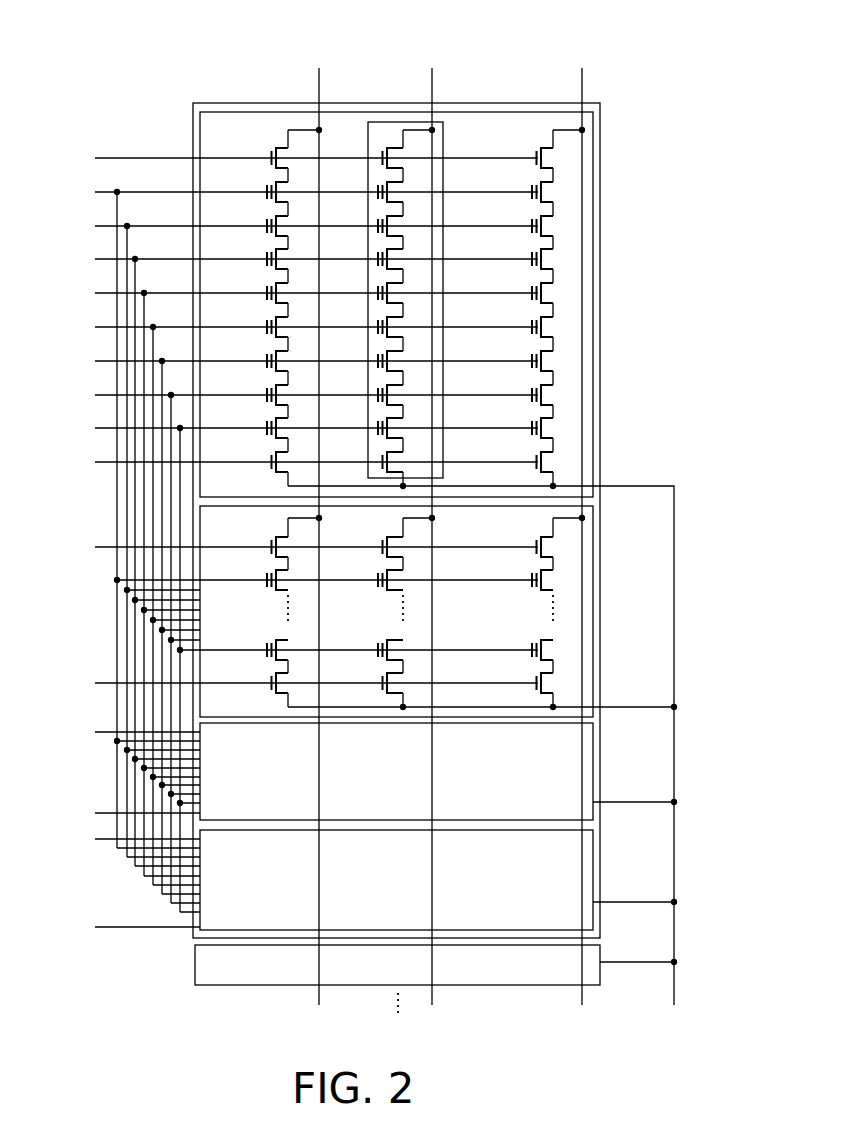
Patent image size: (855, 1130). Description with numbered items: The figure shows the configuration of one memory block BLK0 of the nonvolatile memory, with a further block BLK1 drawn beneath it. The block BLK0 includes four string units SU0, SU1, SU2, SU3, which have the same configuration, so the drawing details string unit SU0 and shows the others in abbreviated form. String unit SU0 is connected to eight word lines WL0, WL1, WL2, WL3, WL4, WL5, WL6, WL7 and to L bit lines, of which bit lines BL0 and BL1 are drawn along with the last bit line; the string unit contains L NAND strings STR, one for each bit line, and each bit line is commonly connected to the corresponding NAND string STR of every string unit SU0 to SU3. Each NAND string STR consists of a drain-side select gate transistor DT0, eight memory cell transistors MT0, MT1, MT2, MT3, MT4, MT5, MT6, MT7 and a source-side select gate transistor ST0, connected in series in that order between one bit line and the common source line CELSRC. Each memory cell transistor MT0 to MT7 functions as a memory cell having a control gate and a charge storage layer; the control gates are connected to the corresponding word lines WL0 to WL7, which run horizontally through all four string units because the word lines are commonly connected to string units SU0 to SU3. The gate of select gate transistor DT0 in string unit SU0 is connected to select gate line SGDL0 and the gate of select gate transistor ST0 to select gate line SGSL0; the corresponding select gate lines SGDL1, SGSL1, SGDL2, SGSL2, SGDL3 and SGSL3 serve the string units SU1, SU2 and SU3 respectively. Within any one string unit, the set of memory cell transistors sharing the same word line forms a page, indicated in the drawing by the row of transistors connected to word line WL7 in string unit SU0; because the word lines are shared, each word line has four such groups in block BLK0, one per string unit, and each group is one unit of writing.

The block BLK0 is at (600, 132).
The block BLK1 is at (195, 973).
The string unit SU0 is at (593, 229).
The string unit SU1 is at (593, 528).
The string unit SU2 is at (593, 751).
The string unit SU3 is at (593, 851).
The NAND string STR is at (445, 128).
The element page is at (562, 183).
The common source line CELSRC is at (483, 735).
The bit line BL0 is at (320, 83).
The bit line BL1 is at (433, 83).
The select gate line SGDL0 is at (285, 157).
The select gate line SGDL1 is at (285, 546).
The select gate line SGDL2 is at (116, 731).
The select gate line SGDL3 is at (116, 838).
The select gate line SGSL0 is at (286, 461).
The select gate line SGSL1 is at (286, 682).
The select gate line SGSL2 is at (117, 812).
The select gate line SGSL3 is at (117, 926).
The word line WL0 is at (296, 664).
The word line WL1 is at (296, 643).
The word line WL2 is at (296, 622).
The word line WL3 is at (296, 600).
The word line WL4 is at (296, 579).
The word line WL5 is at (296, 557).
The word line WL6 is at (296, 536).
The word line WL7 is at (296, 514).
The select gate transistor DT0 is at (264, 155).
The select gate transistor ST0 is at (264, 458).
The memory cell transistor MT0 is at (262, 425).
The memory cell transistor MT1 is at (262, 392).
The memory cell transistor MT2 is at (262, 358).
The memory cell transistor MT3 is at (262, 324).
The memory cell transistor MT4 is at (262, 290).
The memory cell transistor MT5 is at (262, 256).
The memory cell transistor MT6 is at (262, 223).
The memory cell transistor MT7 is at (262, 189).